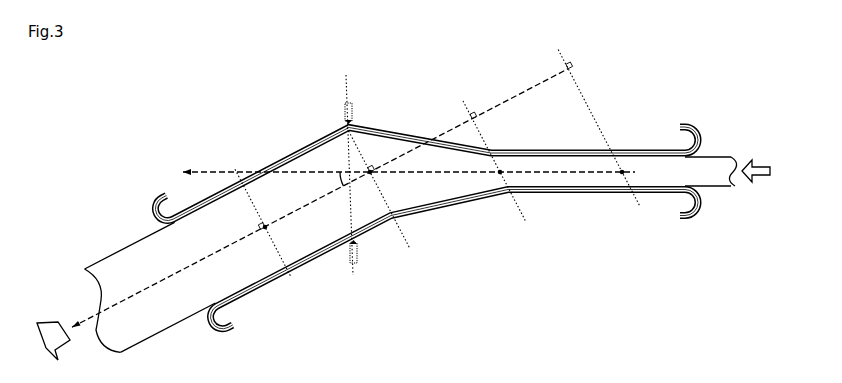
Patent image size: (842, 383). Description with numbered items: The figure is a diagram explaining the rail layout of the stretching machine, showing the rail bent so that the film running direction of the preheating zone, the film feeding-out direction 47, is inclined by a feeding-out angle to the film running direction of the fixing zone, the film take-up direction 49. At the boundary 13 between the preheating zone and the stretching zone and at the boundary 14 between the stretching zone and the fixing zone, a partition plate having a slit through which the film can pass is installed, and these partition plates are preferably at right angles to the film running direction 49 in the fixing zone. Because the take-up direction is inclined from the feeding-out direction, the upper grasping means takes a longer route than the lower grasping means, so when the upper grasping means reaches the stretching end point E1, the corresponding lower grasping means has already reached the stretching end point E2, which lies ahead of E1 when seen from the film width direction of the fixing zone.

The boundary between preheating zone and stretching zone 13 is at (522, 207).
The boundary between stretching zone and fixing zone 14 is at (402, 243).
The film feeding-out direction 47 is at (213, 170).
The film take-up direction 49 is at (93, 315).
The stretching end point E1 is at (351, 122).
The stretching end point E2 is at (353, 245).